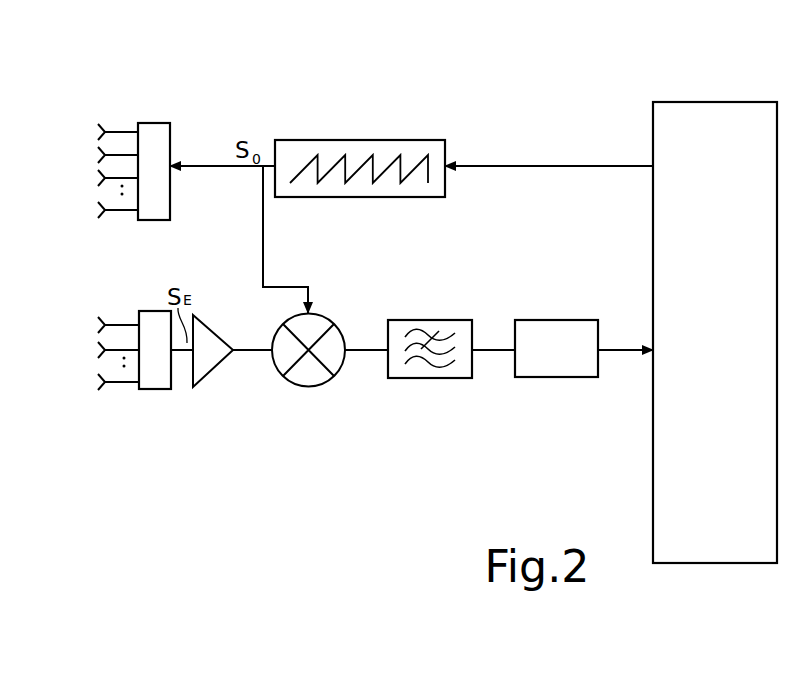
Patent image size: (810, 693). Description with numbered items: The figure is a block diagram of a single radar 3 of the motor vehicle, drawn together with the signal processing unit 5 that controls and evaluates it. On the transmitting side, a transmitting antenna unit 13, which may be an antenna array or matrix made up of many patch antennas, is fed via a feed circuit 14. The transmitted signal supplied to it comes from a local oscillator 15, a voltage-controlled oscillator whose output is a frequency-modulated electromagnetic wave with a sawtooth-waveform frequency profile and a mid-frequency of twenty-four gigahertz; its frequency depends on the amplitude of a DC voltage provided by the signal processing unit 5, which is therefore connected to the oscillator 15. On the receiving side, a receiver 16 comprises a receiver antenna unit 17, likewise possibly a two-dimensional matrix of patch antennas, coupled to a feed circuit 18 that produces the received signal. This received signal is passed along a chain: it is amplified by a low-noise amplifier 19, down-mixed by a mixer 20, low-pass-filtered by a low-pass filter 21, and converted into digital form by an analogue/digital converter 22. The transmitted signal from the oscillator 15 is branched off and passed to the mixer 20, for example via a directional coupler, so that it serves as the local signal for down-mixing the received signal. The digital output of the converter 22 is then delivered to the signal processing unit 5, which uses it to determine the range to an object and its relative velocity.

The radar 3 is at (523, 117).
The signal processing unit 5 is at (678, 110).
The transmitting antenna unit 13 is at (126, 120).
The feed circuit 14 is at (155, 122).
The local oscillator 15 is at (305, 139).
The receiver 16 is at (268, 397).
The receiver antenna unit 17 is at (125, 312).
The feed circuit 18 is at (151, 320).
The low-noise amplifier 19 is at (206, 365).
The mixer 20 is at (305, 388).
The low-pass filter 21 is at (430, 378).
The analogue/digital converter 22 is at (555, 378).